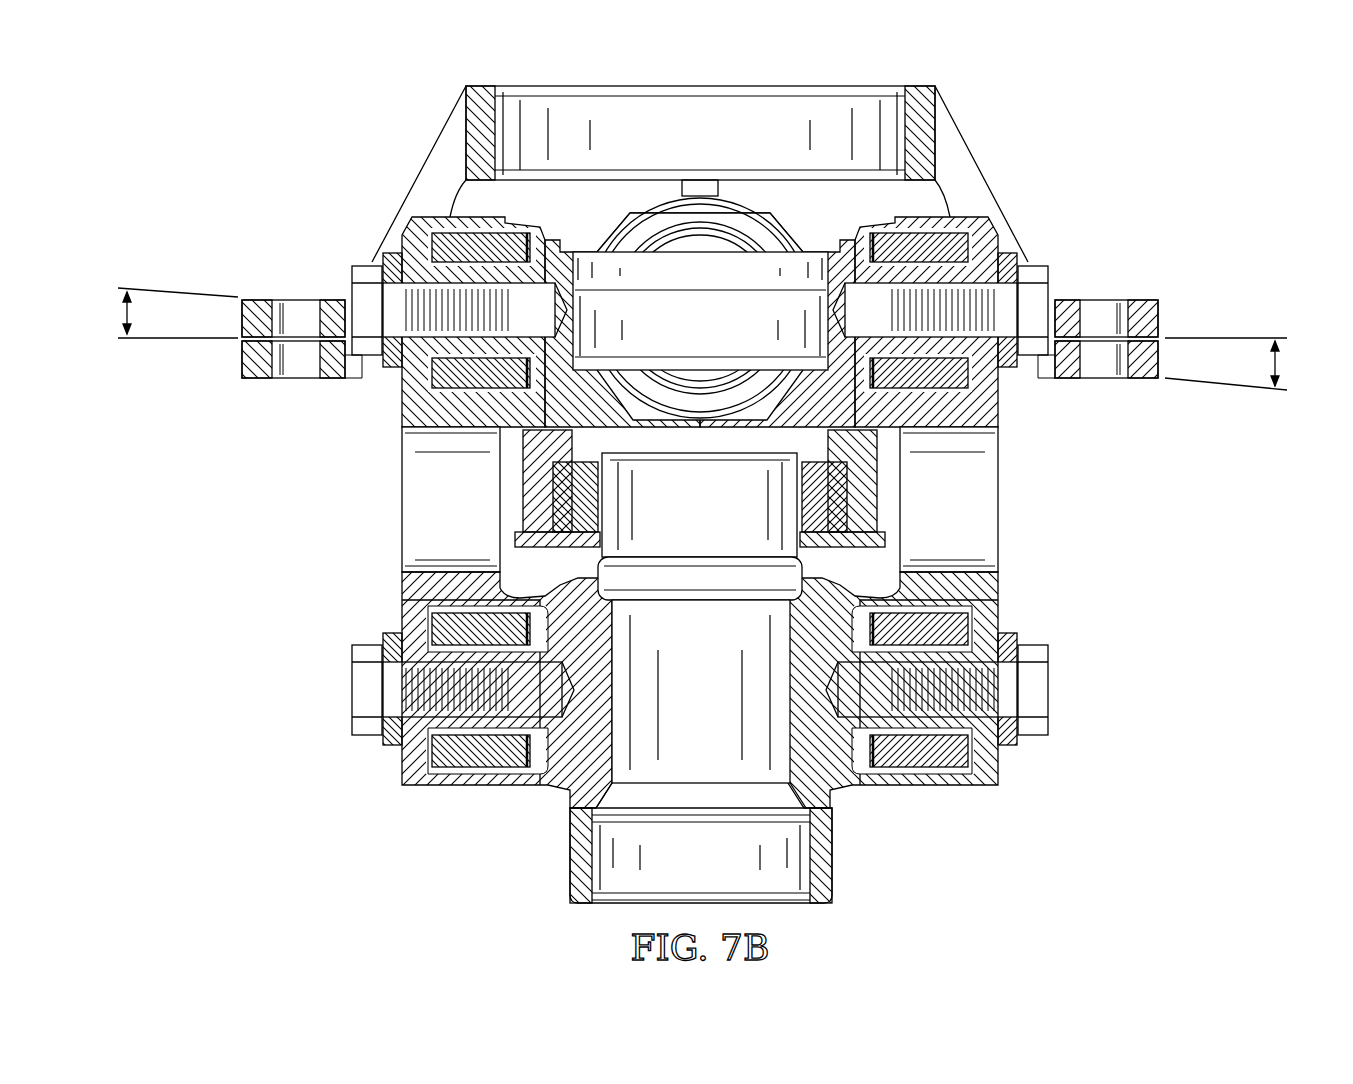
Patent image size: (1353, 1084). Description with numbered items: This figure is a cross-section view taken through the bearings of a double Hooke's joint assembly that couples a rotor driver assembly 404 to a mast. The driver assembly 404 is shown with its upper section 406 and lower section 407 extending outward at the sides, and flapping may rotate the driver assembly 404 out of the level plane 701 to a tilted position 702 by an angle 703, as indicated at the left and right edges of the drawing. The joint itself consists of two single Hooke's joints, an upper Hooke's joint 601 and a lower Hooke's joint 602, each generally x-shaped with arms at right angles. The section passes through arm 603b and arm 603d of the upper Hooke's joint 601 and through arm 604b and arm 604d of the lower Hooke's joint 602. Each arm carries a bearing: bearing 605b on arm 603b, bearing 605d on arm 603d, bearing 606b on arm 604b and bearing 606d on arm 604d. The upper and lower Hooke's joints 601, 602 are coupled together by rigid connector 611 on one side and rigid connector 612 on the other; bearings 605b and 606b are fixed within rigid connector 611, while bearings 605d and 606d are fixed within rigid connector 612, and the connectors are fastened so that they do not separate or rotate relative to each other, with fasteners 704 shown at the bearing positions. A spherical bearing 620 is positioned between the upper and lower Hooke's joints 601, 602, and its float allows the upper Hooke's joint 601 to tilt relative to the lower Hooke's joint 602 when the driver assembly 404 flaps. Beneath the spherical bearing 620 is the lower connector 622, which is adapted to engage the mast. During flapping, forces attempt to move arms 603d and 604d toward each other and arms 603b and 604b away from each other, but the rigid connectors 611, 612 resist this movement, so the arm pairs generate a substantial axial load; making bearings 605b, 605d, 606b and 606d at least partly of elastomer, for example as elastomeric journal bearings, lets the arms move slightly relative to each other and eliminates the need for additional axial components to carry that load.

The driver assembly 404 is at (294, 92).
The upper section 406 is at (257, 300).
The lower section 407 is at (258, 380).
The upper Hooke's joint 601 is at (590, 265).
The lower Hooke's joint 602 is at (560, 777).
The arm 603b is at (447, 272).
The arm 603d is at (958, 272).
The arm 604b is at (432, 760).
The arm 604d is at (955, 725).
The bearing 605b is at (448, 243).
The bearing 605d is at (945, 243).
The bearing 606b is at (465, 763).
The bearing 606d is at (923, 760).
The rigid connector 611 is at (400, 438).
The rigid connector 612 is at (1000, 438).
The spherical bearing 620 is at (597, 498).
The lower connector 622 is at (832, 880).
The level plane 701 is at (160, 342).
The tilted position 702 is at (175, 287).
The angle 703 is at (124, 312).
The bolt 704 is at (352, 275).